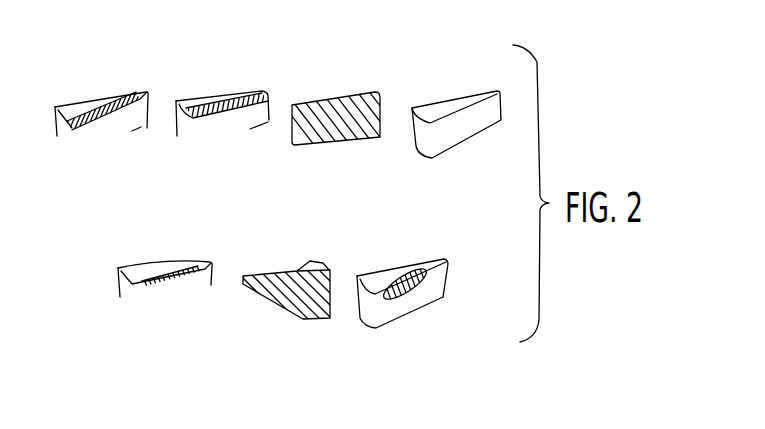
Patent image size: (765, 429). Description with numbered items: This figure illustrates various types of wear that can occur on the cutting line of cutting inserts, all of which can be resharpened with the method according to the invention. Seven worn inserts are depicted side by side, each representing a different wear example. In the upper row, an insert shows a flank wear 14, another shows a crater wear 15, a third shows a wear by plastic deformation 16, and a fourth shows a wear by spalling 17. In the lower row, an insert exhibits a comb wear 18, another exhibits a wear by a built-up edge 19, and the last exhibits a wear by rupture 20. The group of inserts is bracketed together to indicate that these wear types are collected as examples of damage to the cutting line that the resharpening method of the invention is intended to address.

The flank wear 14 is at (103, 86).
The crater wear 15 is at (222, 84).
The wear by plastic deformation 16 is at (338, 86).
The wear by spalling 17 is at (450, 82).
The comb wear 18 is at (165, 255).
The wear by a built-up edge 19 is at (283, 261).
The wear by rupture 20 is at (407, 251).